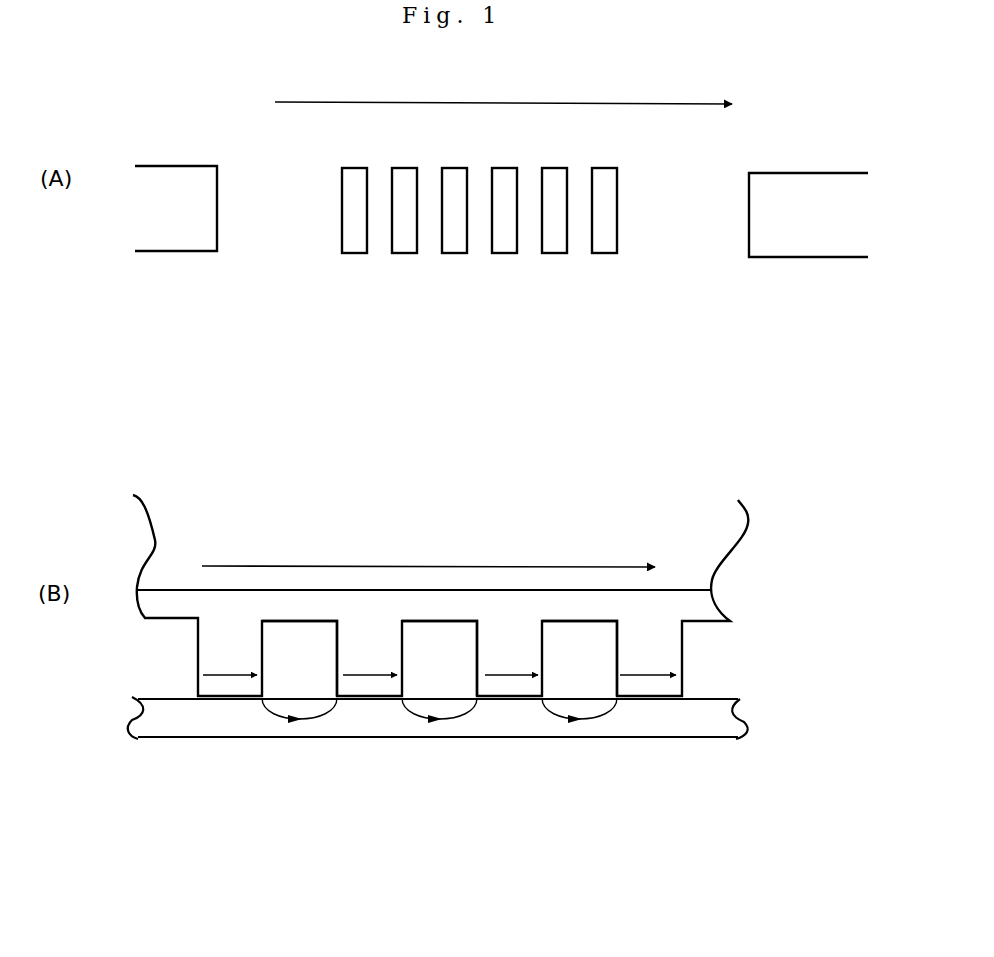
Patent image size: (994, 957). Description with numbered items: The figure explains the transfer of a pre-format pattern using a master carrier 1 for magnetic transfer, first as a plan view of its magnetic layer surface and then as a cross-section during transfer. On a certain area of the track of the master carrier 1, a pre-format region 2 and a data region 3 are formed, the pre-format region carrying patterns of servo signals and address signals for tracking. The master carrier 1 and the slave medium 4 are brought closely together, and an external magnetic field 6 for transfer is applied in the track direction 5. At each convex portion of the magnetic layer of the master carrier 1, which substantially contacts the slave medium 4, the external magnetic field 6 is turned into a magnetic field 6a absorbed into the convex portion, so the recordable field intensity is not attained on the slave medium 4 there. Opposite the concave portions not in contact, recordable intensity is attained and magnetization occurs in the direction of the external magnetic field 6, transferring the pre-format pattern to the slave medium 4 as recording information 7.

The master carrier for magnetic transfer 1 is at (188, 138).
The pre-format region 2 is at (695, 610).
The data region 3 is at (667, 650).
The slave medium 4 is at (727, 725).
The track direction 5 is at (517, 107).
The external magnetic field for transfer 6 is at (425, 565).
The magnetic field absorbed to the convex portion 6a is at (512, 677).
The recording information 7 is at (425, 722).